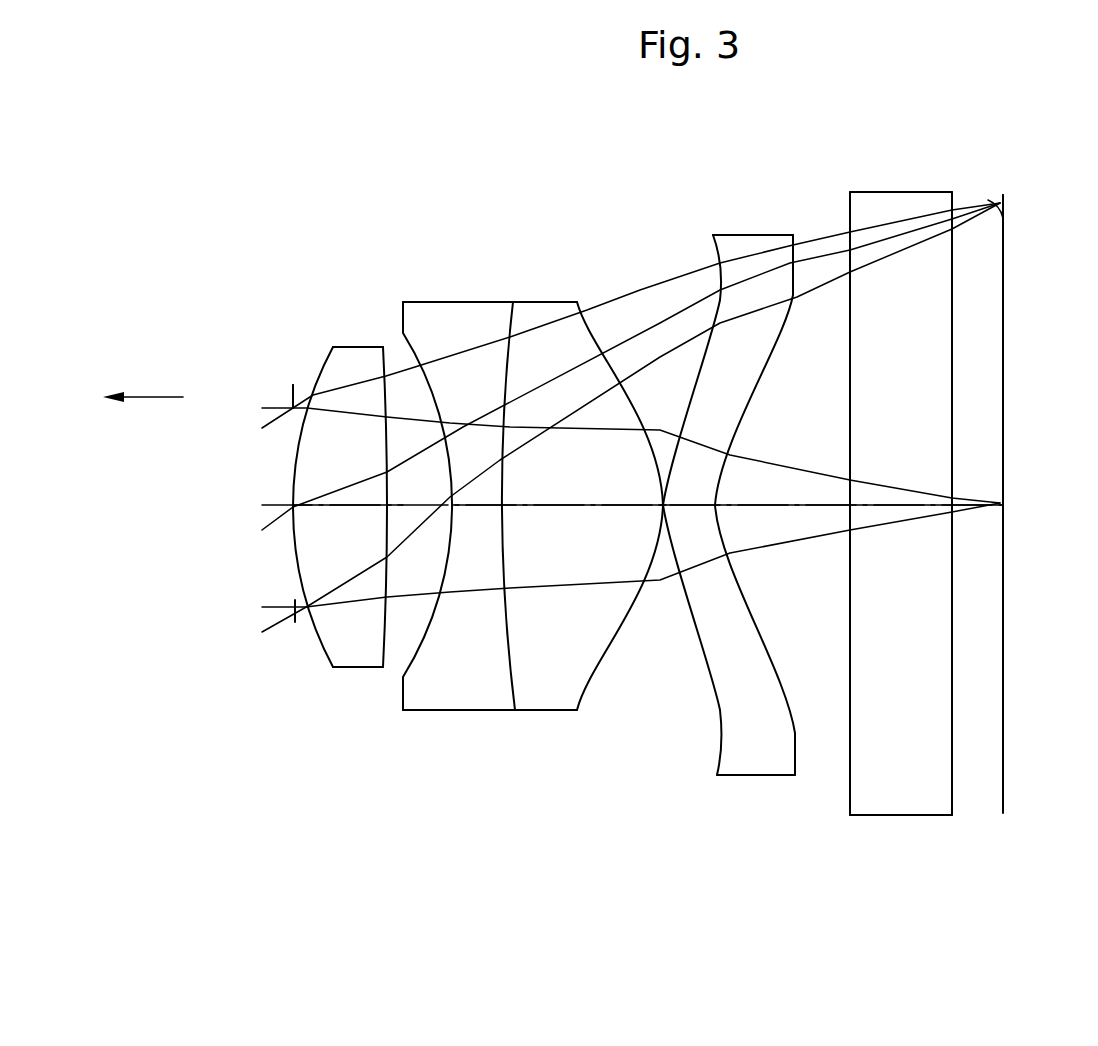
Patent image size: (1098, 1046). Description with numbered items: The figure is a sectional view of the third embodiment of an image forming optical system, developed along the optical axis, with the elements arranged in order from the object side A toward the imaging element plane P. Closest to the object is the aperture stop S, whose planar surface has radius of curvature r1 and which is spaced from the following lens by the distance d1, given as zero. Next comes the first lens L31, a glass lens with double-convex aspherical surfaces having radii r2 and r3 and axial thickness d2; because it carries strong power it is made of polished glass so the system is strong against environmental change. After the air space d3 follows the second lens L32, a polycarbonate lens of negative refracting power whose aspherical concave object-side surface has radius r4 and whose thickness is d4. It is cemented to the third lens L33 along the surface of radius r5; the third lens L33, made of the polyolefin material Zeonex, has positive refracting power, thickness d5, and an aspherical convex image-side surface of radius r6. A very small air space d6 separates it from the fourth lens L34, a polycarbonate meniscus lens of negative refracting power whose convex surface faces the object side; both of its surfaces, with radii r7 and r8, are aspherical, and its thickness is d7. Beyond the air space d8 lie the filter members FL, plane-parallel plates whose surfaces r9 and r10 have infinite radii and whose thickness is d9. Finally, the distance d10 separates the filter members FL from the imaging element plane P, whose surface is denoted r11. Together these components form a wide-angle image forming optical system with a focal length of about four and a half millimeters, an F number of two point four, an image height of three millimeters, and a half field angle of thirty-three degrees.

The radius of curvature of the aperture stop surface r1 is at (293, 387).
The radius of curvature of the object-side surface of the first lens r2 is at (323, 363).
The radius of curvature of the image-side surface of the first lens r3 is at (383, 364).
The radius of curvature of the object-side surface of the second lens r4 is at (402, 313).
The radius of curvature of the cemented surface r5 is at (508, 335).
The radius of curvature of the image-side surface of the third lens r6 is at (582, 333).
The radius of curvature of the object-side surface of the fourth lens r7 is at (702, 363).
The radius of curvature of the image-side surface of the fourth lens r8 is at (793, 307).
The radius of curvature of the object-side surface of the filter member r9 is at (848, 212).
The radius of curvature of the image-side surface of the filter member r10 is at (952, 208).
The radius of curvature of the image plane r11 is at (988, 197).
The air space between the aperture stop and the first lens d1 is at (300, 598).
The thickness of the first lens d2 is at (357, 507).
The air space between the first and second lenses d3 is at (397, 510).
The thickness of the second lens d4 is at (500, 510).
The thickness of the third lens d5 is at (606, 510).
The air space between the third and fourth lenses d6 is at (662, 512).
The thickness of the fourth lens d7 is at (700, 508).
The air space between the fourth lens and the filter member d8 is at (800, 507).
The thickness of the filter member d9 is at (917, 505).
The air space between the filter member and the image plane d10 is at (987, 507).
The aperture stop S is at (297, 622).
The first lens L31 is at (344, 535).
The second lens L32 is at (447, 525).
The third lens L33 is at (588, 540).
The fourth lens L34 is at (735, 491).
The filter members FL is at (905, 515).
The imaging element plane P is at (1032, 499).
The object side A is at (143, 380).